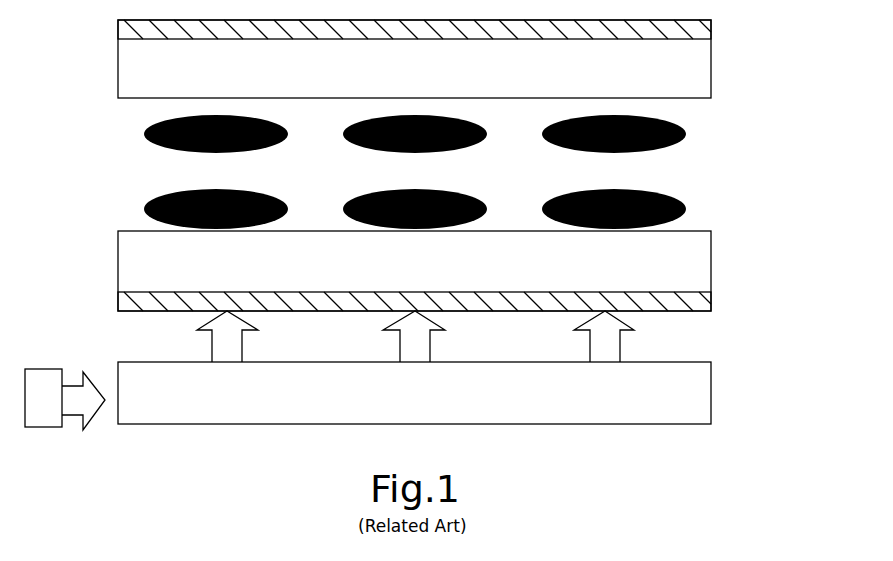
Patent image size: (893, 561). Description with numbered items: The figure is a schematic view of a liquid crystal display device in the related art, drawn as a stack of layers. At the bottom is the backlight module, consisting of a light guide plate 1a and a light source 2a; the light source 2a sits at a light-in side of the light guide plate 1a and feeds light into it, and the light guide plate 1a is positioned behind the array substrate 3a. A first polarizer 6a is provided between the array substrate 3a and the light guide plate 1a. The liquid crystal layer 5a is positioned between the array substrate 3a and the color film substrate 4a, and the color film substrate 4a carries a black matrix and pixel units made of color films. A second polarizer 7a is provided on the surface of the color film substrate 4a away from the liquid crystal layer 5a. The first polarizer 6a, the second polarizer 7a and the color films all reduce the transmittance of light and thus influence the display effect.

The light guide plate 1a is at (705, 400).
The light source 2a is at (44, 368).
The array substrate 3a is at (704, 250).
The color film substrate 4a is at (703, 83).
The liquid crystal layer 5a is at (686, 132).
The first polarizer 6a is at (711, 302).
The second polarizer 7a is at (711, 22).